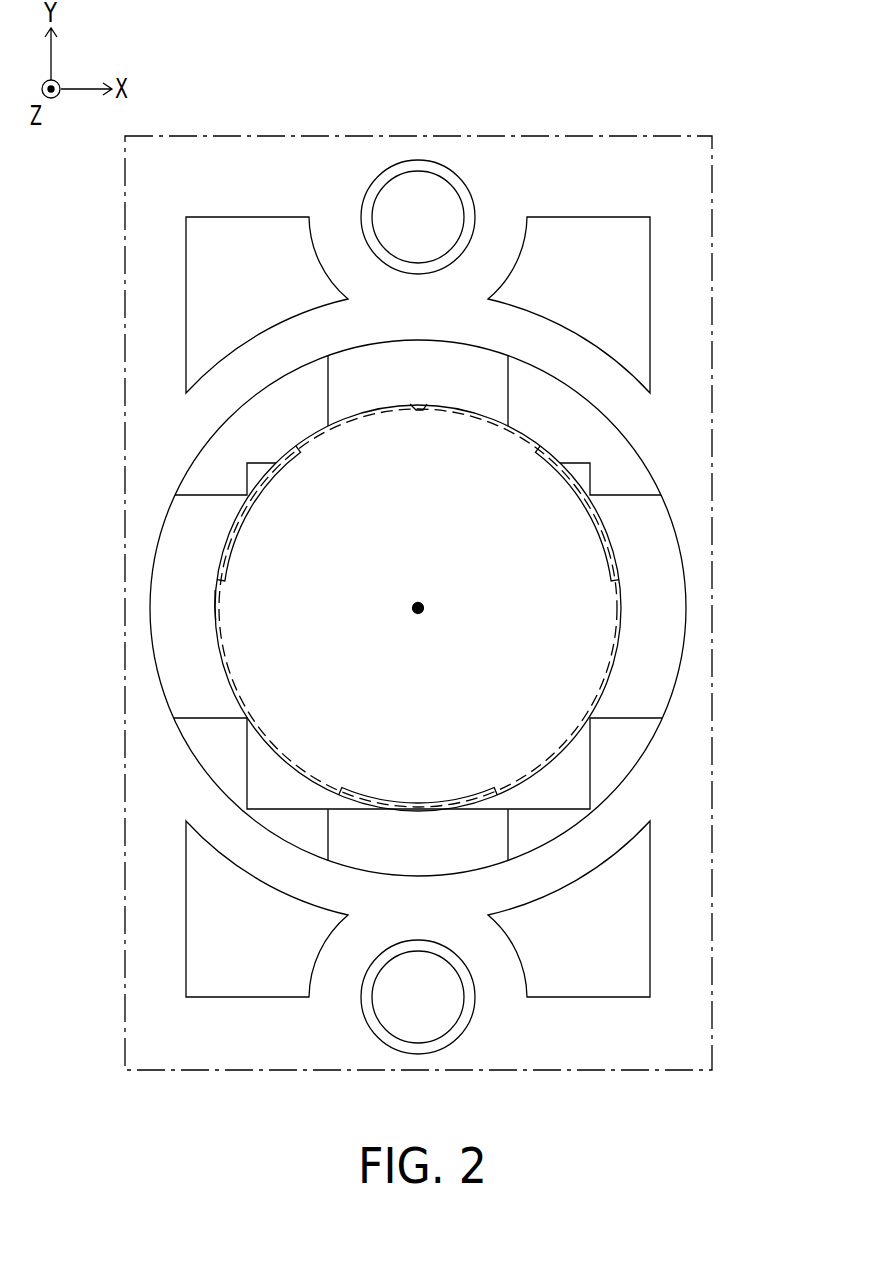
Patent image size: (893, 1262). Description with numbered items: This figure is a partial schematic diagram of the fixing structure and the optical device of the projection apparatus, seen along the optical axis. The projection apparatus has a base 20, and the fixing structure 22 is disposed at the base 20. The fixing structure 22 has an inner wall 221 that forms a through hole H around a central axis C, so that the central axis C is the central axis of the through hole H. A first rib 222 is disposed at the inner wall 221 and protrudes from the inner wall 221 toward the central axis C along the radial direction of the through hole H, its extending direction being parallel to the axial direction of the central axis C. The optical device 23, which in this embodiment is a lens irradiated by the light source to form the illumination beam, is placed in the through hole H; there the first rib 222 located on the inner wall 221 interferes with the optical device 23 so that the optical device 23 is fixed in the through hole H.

The base 20 is at (662, 425).
The fixing structure 22 is at (190, 553).
The inner wall 221 is at (245, 650).
The first rib 222 is at (418, 405).
The optical device 23 is at (615, 622).
The through hole H is at (215, 602).
The central axis C is at (421, 606).